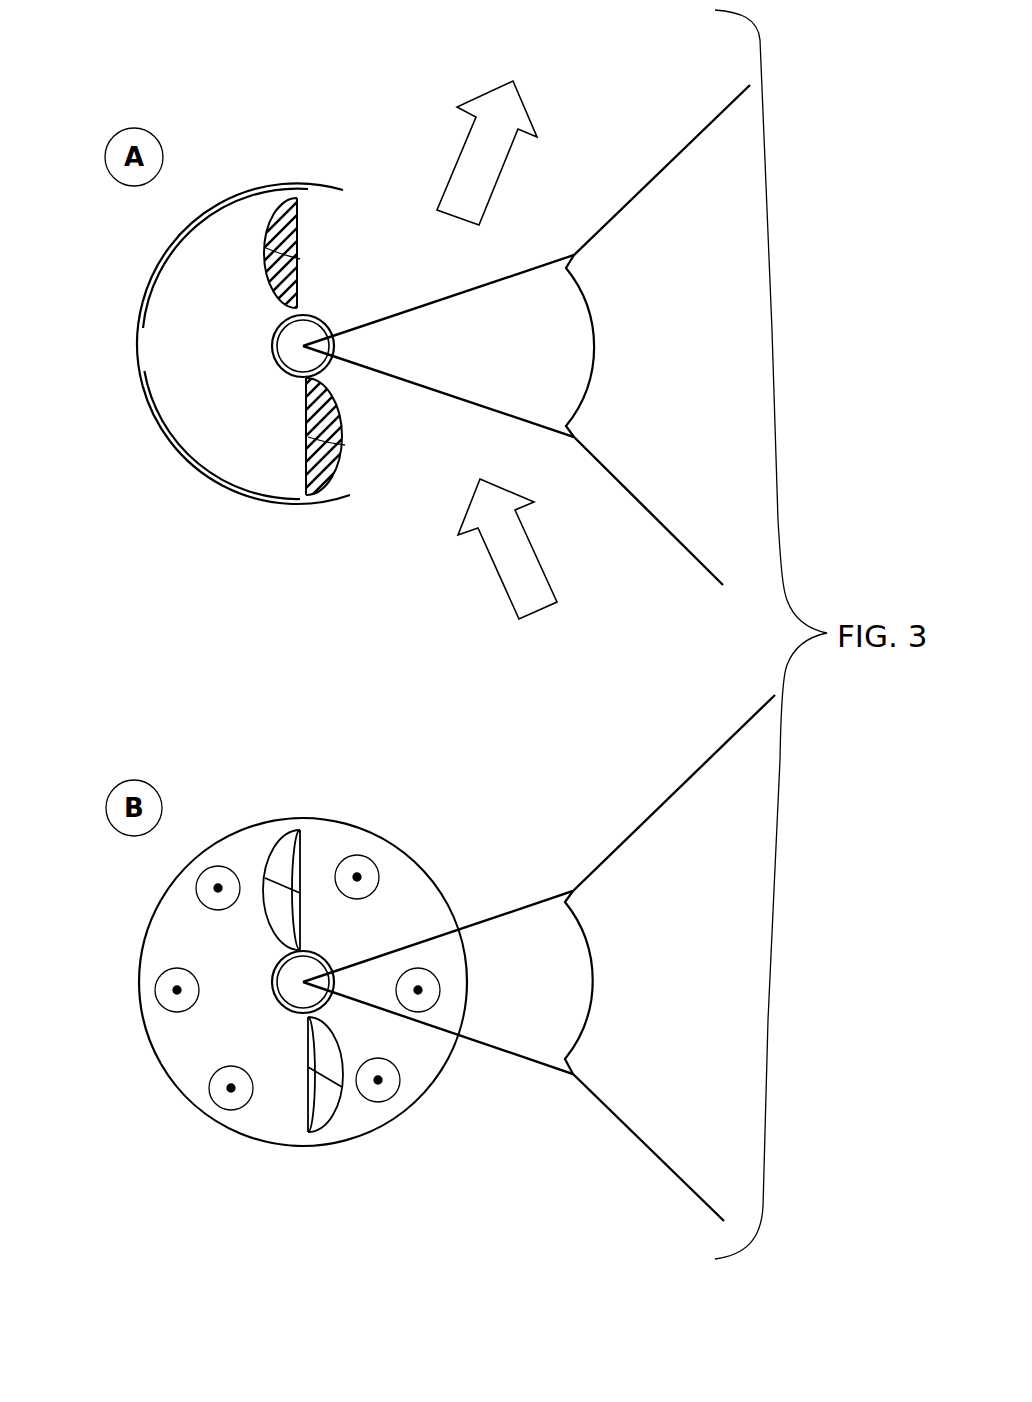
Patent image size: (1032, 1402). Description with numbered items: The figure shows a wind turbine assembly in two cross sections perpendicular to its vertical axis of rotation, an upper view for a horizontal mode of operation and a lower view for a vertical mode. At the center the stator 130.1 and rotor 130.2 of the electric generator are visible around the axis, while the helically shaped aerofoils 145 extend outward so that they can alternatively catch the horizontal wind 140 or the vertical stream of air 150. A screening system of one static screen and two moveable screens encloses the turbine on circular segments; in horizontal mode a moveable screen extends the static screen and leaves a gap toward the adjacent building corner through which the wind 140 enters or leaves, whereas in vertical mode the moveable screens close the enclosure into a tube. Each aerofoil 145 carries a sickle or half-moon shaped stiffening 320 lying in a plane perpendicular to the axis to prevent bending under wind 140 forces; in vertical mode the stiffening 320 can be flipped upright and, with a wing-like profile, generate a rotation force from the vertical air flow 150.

The stator 130.1 is at (290, 377).
The rotor 130.2 is at (293, 380).
The wind 140 is at (470, 98).
The aerofoil 145 is at (312, 264).
The vertical stream of air 150 is at (437, 971).
The stiffening 320 is at (293, 227).